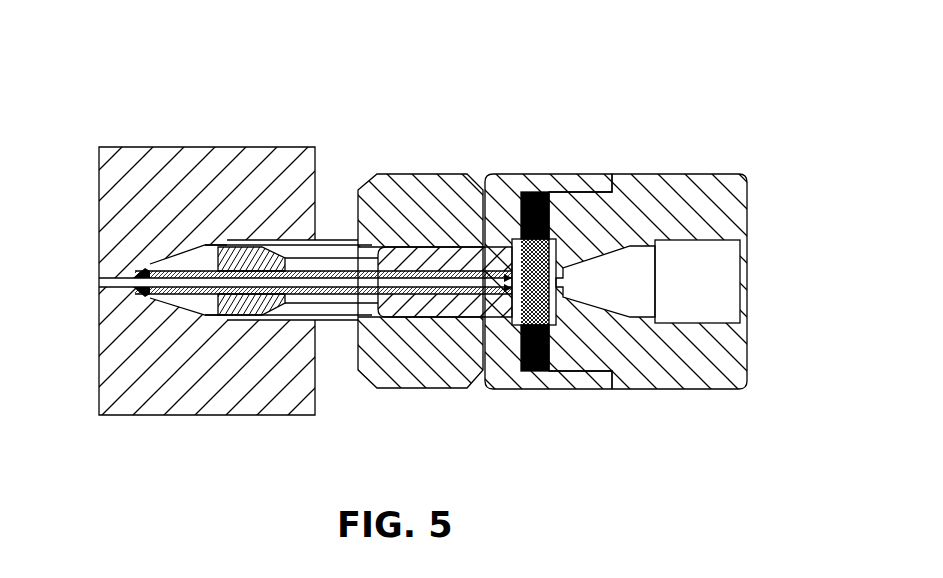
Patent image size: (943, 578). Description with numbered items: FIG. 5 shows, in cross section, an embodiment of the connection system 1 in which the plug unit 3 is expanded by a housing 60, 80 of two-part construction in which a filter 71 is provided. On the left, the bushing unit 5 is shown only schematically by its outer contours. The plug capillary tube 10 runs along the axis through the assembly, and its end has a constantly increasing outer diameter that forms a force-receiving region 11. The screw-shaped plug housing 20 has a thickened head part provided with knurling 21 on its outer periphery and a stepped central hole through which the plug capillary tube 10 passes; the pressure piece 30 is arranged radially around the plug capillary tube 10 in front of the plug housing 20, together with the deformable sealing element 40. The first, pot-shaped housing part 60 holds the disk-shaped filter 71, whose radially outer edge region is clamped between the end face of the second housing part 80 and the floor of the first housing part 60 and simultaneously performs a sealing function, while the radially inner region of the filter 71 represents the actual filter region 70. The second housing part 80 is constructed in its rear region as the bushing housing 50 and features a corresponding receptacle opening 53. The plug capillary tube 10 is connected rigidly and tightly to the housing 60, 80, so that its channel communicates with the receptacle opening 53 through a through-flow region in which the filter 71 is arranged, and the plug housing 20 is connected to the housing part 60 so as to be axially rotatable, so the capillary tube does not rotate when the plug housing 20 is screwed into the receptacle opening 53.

The connection system 1 is at (566, 85).
The plug unit 3 is at (538, 424).
The bushing unit 5 is at (211, 462).
The plug capillary tube 10 is at (440, 287).
The force-receiving region 11 is at (130, 272).
The plug housing 20 is at (464, 168).
The knurling 21 is at (405, 172).
The pressure piece 30 is at (157, 267).
The sealing element 40 is at (148, 298).
The bushing housing 50 is at (245, 160).
The receptacle opening 53 is at (729, 300).
The first housing part 60 is at (507, 185).
The filter region 70 is at (550, 340).
The filter 71 is at (523, 377).
The second housing part 80 is at (655, 175).